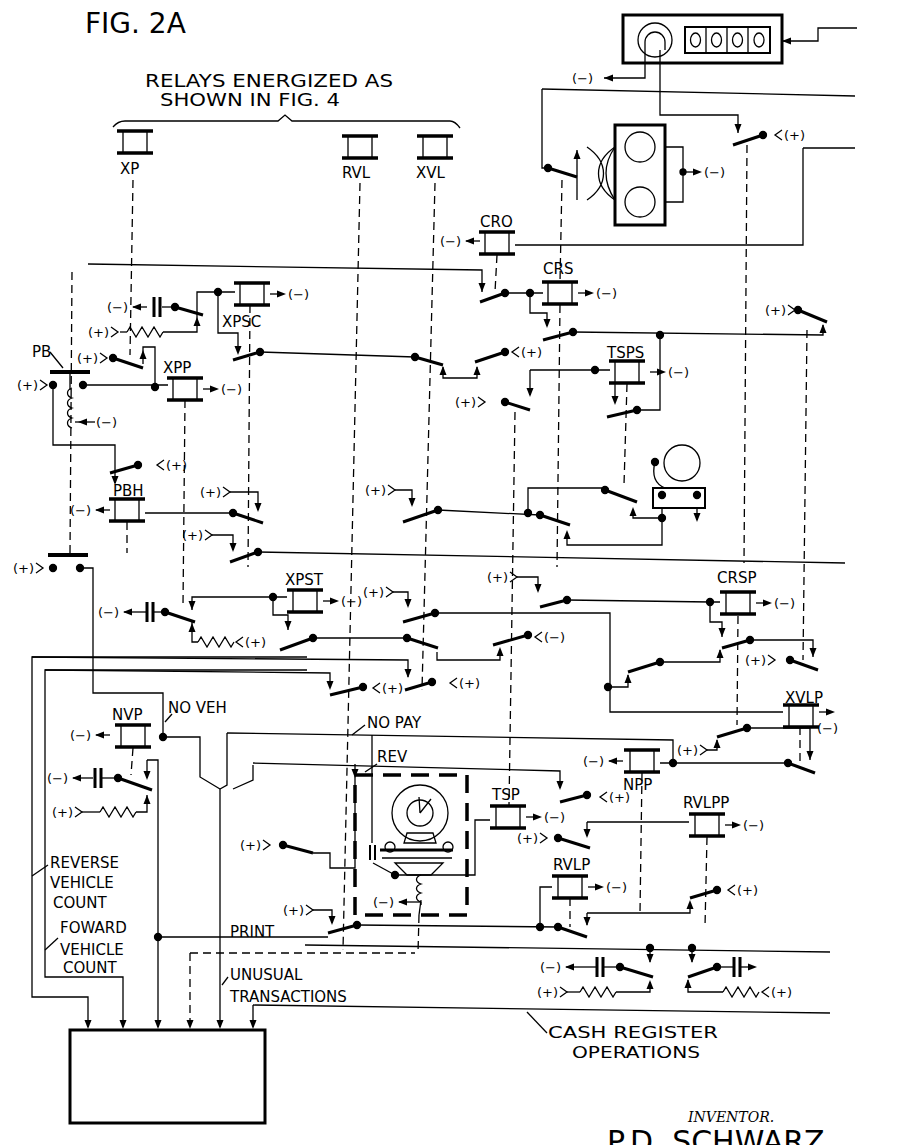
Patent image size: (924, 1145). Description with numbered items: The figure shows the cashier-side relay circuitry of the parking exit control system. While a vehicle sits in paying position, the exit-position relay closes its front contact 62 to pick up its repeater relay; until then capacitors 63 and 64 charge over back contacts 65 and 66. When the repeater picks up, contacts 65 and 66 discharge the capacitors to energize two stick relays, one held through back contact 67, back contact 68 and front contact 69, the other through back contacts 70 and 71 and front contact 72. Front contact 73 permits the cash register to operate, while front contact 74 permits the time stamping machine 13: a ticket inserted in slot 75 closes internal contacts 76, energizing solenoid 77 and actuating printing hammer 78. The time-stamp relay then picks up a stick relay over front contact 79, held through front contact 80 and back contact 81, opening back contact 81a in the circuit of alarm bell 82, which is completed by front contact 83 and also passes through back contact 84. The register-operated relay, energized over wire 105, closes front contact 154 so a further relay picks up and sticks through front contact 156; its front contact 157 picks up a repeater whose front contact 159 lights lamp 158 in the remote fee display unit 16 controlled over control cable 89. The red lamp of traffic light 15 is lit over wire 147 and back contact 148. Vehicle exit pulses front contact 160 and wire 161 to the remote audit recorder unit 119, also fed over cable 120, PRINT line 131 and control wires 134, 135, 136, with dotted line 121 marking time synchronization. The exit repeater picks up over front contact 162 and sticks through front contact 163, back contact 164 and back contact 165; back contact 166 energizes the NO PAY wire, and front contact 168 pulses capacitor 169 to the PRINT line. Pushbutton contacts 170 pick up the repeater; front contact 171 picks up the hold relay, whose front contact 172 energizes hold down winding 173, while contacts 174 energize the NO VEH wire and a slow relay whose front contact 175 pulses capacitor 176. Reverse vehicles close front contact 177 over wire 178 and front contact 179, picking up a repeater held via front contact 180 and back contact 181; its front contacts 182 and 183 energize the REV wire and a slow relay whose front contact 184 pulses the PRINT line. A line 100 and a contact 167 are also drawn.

The time stamping machine 13 is at (467, 905).
The traffic light 15 is at (665, 212).
The remote fee display unit 16 is at (745, 64).
The front contact of relay XP 62 is at (132, 368).
The capacitor 63 is at (133, 299).
The capacitor 64 is at (131, 602).
The contact of relay XPP 65 is at (200, 305).
The contact of relay XPP 66 is at (193, 625).
The back contact of relay CRO 67 is at (485, 353).
The back contact of relay XVL 68 is at (427, 355).
The front contact of relay XPSC 69 is at (250, 356).
The back contact of relay TSP 70 is at (529, 650).
The back contact of relay XVL 71 is at (435, 648).
The front contact of relay XPST 72 is at (304, 634).
The front contact of relay XPSC 73 is at (222, 556).
The front contact of relay XPST 74 is at (276, 857).
The slot 75 is at (450, 853).
The internal contacts 76 is at (382, 852).
The solenoid 77 is at (426, 892).
The printing hammer 78 is at (447, 866).
The front contact of relay TSP 79 is at (502, 416).
The front contact of relay TSPS 80 is at (633, 413).
The back contact of relay XVLP 81 is at (810, 314).
The back contact of relay TSPS 81a is at (622, 492).
The alarm bell 82 is at (692, 452).
The front contact of relay XVL 83 is at (425, 515).
The back contact of relay CRS 84 is at (573, 513).
The control cable 89 is at (819, 41).
The line 100 is at (770, 558).
The wire 105 is at (803, 212).
The remote audit recorder unit 119 is at (265, 1072).
The cable 120 is at (813, 1013).
The dotted line 121 is at (415, 955).
The PRINT line 131 is at (770, 952).
The REV control wire 134 is at (398, 777).
The NO VEH control wire 135 is at (202, 753).
The NO PAY control wire 136 is at (243, 761).
The wire 147 is at (812, 97).
The back contact of relay CRS 148 is at (558, 170).
The front contact of relay CRO 154 is at (480, 298).
The front contact of relay CRS 156 is at (563, 330).
The front contact of relay CRS 157 is at (555, 603).
The lamp 158 is at (638, 36).
The front contact of relay CRSP 159 is at (745, 140).
The front contact of relay XVL 160 is at (442, 693).
The wire 161 is at (32, 660).
The front contact of relay XVL 162 is at (423, 615).
The front contact of relay XVLP 163 is at (795, 667).
The back contact of relay CRSP 164 is at (720, 647).
The back contact of relay NPP 165 is at (667, 671).
The back contact of relay CRSP 166 is at (733, 730).
The contact 167 is at (740, 779).
The front contact of relay NPP 168 is at (724, 978).
The capacitor 169 is at (596, 964).
The contacts of pushbutton PB 170 is at (58, 390).
The front contact of relay XPSC 171 is at (263, 520).
The front contact of relay PBH 172 is at (148, 458).
The hold down winding 173 is at (86, 436).
The contacts of pushbutton PB 174 is at (88, 646).
The front contact of relay NVP 175 is at (138, 789).
The capacitor 176 is at (82, 770).
The front contact of relay RVL 177 is at (355, 701).
The wire 178 is at (45, 725).
The front contact of relay RVL 179 is at (322, 922).
The front contact of relay RVLP 180 is at (624, 922).
The back contact of relay RVLPP 181 is at (714, 900).
The front contact of relay RVLP 182 is at (595, 790).
The front contact of relay RVLP 183 is at (592, 845).
The front contact of relay RVLPP 184 is at (686, 980).